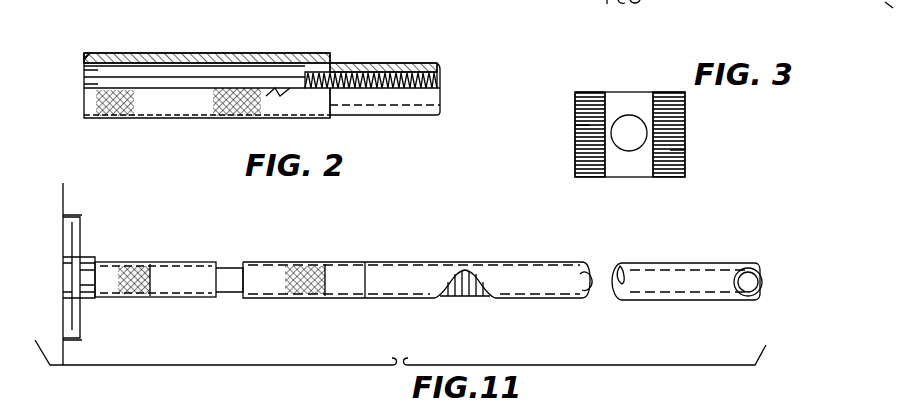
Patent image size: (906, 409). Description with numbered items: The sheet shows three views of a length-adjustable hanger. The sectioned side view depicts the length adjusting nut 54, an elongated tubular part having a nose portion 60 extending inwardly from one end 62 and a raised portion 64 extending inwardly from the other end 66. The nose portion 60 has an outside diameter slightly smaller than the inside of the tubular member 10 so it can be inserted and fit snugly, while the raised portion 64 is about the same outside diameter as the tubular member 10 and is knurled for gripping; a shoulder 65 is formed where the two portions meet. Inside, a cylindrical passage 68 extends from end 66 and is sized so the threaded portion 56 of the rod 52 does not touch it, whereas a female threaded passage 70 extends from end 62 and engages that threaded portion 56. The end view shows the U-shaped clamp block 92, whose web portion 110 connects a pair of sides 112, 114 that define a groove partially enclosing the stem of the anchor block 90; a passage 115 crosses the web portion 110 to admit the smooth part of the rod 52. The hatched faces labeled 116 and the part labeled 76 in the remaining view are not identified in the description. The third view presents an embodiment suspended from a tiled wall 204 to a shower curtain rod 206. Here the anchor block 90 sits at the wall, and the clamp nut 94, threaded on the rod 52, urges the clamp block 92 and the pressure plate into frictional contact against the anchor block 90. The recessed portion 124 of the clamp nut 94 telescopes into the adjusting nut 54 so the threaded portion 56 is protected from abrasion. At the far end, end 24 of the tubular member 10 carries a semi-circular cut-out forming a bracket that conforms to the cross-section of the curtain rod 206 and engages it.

In FIG. 11, the tubular member 10 is at (584, 303).
In FIG. 11, the end of tubular member 24 is at (755, 269).
In FIG. 11, the rod 52 is at (467, 283).
In FIG. 2, the length adjusting nut 54 is at (185, 120).
In FIG. 11, the length adjusting nut 54 is at (290, 300).
In FIG. 11, the threaded portion of rod 56 is at (445, 293).
In FIG. 2, the nose portion 60 is at (378, 62).
In FIG. 2, the end of nut 62 is at (441, 70).
In FIG. 2, the raised portion 64 is at (185, 52).
In FIG. 2, the shoulder 65 is at (332, 118).
In FIG. 2, the other end of nut 66 is at (87, 62).
In FIG. 2, the passage 68 is at (97, 78).
In FIG. 2, the female threaded passage 70 is at (441, 84).
In FIG. 11, the plate 76 is at (82, 333).
In FIG. 11, the anchor block 90 is at (63, 278).
In FIG. 3, the clamp block 92 is at (690, 134).
In FIG. 11, the clamp block 92 is at (93, 300).
In FIG. 11, the clamp nut 94 is at (185, 300).
In FIG. 3, the web portion 110 is at (625, 100).
In FIG. 3, the side 112 is at (590, 92).
In FIG. 3, the side 114 is at (665, 90).
In FIG. 3, the passage 115 is at (630, 143).
In FIG. 3, the knurled faces 116 is at (580, 124).
In FIG. 11, the recessed portion 124 is at (230, 267).
In FIG. 11, the tiled wall 204 is at (63, 197).
In FIG. 11, the shower curtain rod 206 is at (762, 286).